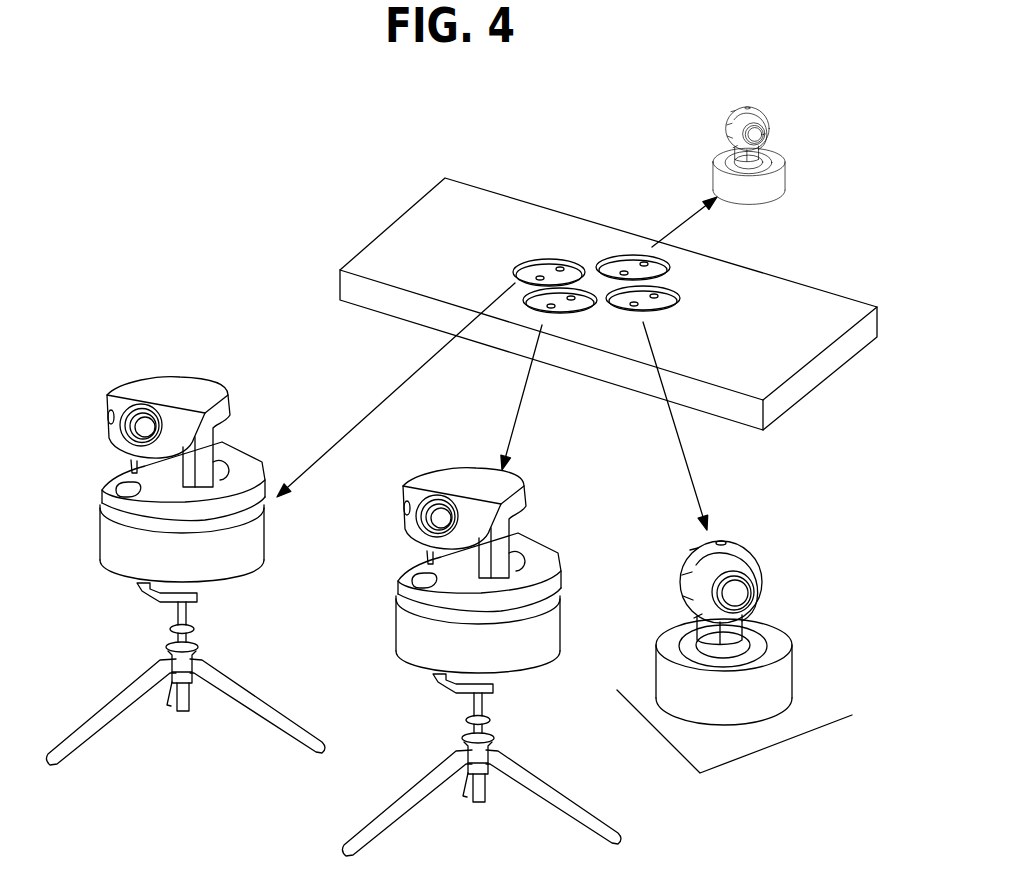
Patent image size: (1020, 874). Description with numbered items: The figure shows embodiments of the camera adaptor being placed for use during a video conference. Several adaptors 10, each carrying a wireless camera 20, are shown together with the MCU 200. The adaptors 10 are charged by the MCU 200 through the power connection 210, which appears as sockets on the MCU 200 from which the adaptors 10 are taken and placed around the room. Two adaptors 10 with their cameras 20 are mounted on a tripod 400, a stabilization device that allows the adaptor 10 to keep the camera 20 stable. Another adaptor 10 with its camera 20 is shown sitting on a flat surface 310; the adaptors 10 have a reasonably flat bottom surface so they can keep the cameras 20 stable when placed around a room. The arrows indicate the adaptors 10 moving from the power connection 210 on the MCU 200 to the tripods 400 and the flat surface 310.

The adaptor 10 is at (266, 529).
The wireless camera 20 is at (213, 383).
The MCU 200 is at (825, 379).
The power connection 210 is at (568, 308).
The flat surface 310 is at (787, 733).
The tripod 400 is at (255, 694).